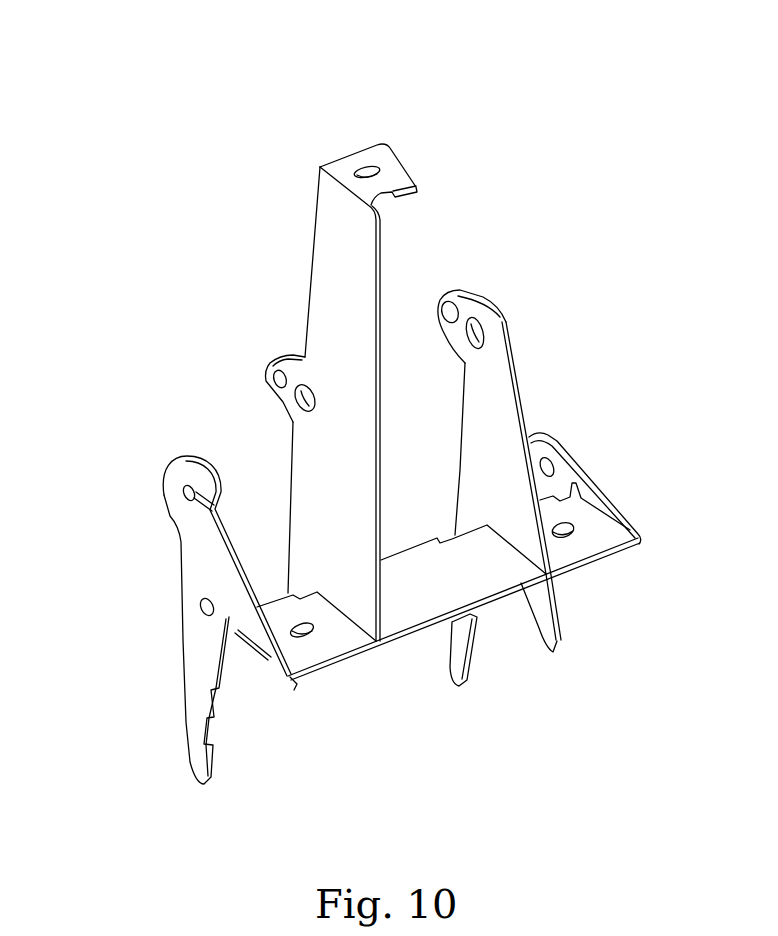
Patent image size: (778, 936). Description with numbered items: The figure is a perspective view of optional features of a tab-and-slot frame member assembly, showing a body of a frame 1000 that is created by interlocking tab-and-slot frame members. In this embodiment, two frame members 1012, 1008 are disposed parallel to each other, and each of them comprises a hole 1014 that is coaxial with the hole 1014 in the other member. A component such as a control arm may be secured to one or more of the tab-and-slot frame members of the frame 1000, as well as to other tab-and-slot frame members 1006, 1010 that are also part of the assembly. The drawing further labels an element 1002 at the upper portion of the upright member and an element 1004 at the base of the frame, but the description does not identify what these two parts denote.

The frame 1000 is at (180, 180).
The top mounting flange 1002 is at (380, 197).
The base plate 1004 is at (435, 603).
The tab-and-slot frame member 1006 is at (200, 564).
The frame member 1008 is at (485, 386).
The tab-and-slot frame member 1010 is at (558, 473).
The frame member 1012 is at (342, 352).
The hole 1014 is at (280, 378).